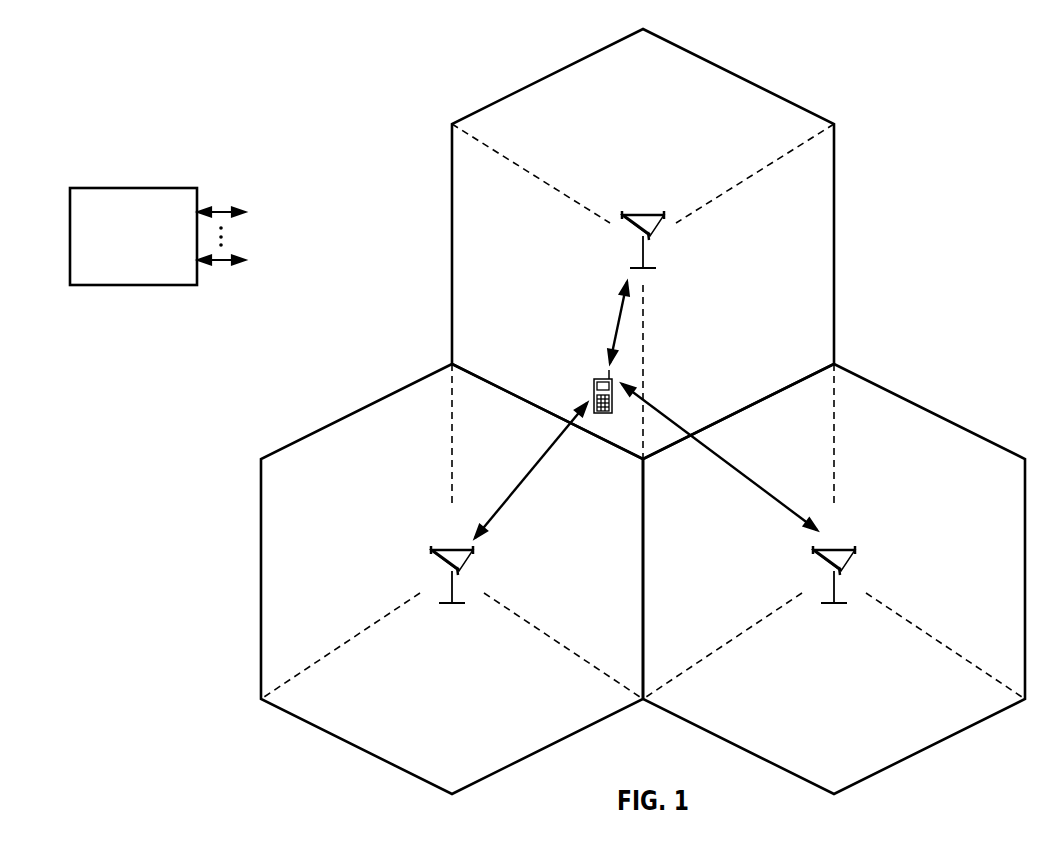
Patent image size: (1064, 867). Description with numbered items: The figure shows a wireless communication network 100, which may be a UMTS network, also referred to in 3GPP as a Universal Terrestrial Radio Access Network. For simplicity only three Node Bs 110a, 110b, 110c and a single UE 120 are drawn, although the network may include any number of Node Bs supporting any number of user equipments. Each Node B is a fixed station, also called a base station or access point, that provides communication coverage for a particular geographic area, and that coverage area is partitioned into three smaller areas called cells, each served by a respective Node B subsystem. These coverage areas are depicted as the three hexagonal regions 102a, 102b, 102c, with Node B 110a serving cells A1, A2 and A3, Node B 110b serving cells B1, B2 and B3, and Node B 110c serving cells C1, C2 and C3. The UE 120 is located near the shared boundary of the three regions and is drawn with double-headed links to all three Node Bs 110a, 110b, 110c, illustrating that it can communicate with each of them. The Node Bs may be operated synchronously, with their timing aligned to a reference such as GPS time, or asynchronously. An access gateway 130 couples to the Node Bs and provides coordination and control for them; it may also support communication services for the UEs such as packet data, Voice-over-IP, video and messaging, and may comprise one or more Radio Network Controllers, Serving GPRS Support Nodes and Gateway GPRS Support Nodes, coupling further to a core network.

The wireless communication network 100 is at (975, 86).
The cell site A 102a is at (740, 78).
The cell site B 102b is at (355, 413).
The cell site C 102c is at (929, 412).
The Node B 110a is at (645, 215).
The Node B 110b is at (448, 550).
The Node B 110c is at (845, 550).
The UE 120 is at (594, 388).
The access gateway 130 is at (128, 188).